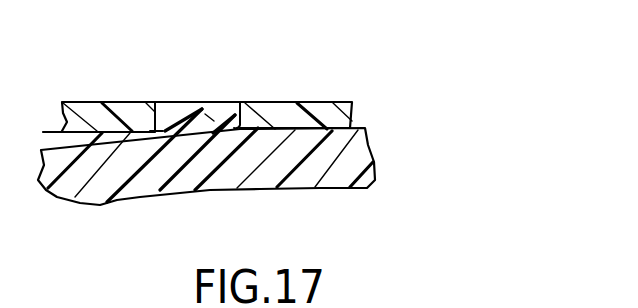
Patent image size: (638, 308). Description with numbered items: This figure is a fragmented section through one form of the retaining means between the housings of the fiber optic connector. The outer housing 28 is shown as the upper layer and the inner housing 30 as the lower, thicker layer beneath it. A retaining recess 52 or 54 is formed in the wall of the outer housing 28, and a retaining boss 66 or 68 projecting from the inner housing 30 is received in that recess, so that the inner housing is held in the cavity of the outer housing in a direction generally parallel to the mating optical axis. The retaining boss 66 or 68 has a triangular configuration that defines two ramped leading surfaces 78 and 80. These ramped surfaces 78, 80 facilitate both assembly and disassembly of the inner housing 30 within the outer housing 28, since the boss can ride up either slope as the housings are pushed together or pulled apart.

The outer housing 28 is at (351, 110).
The inner housing 30 is at (378, 170).
The retaining recess 52 is at (311, 79).
The retaining recess 54 is at (212, 120).
The retaining boss 66 is at (230, 173).
The retaining boss 68 is at (205, 115).
The ramped leading surface 78 is at (178, 112).
The ramped leading surface 80 is at (205, 112).